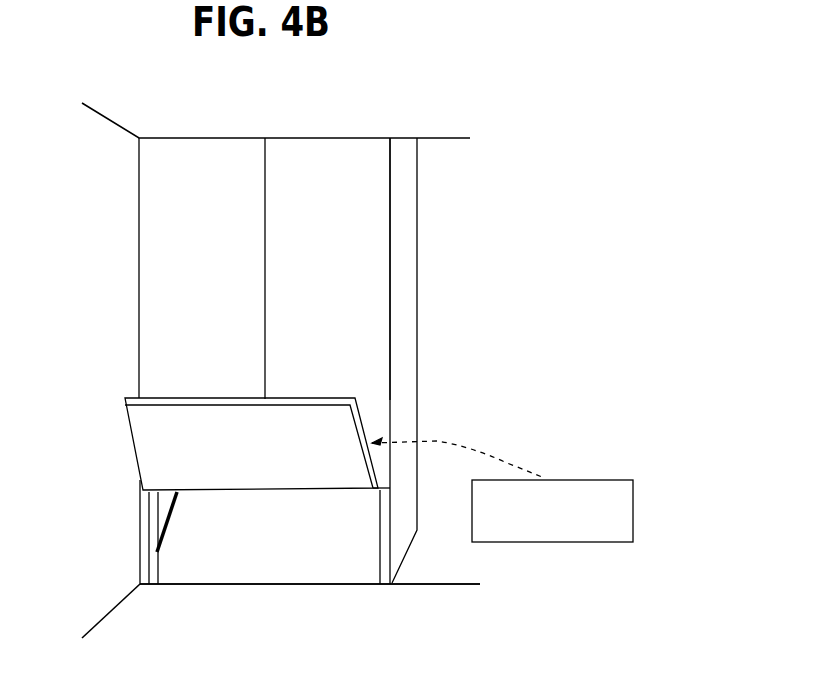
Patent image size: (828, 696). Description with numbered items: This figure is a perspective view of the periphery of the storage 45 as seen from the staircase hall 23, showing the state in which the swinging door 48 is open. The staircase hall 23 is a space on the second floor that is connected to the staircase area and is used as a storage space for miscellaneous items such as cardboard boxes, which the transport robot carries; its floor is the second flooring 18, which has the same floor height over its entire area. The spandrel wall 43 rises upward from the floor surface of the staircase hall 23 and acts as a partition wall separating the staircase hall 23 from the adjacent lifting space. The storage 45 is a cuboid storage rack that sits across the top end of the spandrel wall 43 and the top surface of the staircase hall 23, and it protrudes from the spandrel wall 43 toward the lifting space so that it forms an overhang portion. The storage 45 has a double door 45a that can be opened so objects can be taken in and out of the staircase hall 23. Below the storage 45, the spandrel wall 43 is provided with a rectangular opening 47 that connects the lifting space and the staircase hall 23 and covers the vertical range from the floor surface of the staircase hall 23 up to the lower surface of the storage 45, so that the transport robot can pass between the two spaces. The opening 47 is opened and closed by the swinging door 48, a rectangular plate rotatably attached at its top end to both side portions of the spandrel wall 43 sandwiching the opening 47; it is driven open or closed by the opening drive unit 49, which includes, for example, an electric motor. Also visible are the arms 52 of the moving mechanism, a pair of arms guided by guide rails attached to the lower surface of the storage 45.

The flooring 18 is at (127, 607).
The staircase hall 23 is at (222, 296).
The spandrel wall 43 is at (145, 532).
The storage 45 is at (405, 283).
The double door 45a is at (375, 210).
The opening 47 is at (272, 585).
The swinging door 48 is at (143, 433).
The opening drive unit 49 is at (633, 480).
The arms 52 is at (175, 520).